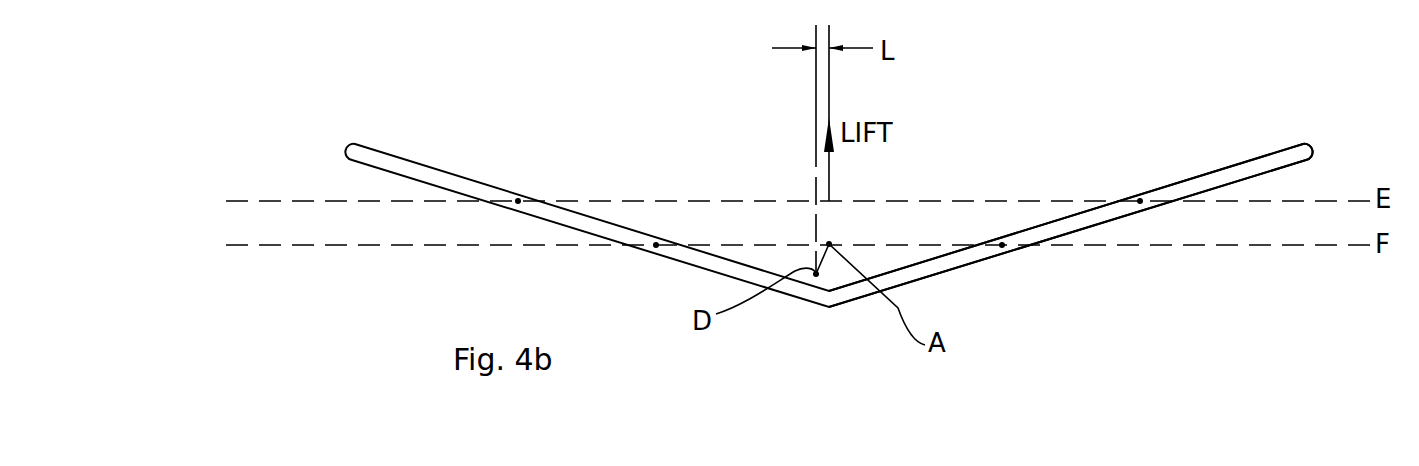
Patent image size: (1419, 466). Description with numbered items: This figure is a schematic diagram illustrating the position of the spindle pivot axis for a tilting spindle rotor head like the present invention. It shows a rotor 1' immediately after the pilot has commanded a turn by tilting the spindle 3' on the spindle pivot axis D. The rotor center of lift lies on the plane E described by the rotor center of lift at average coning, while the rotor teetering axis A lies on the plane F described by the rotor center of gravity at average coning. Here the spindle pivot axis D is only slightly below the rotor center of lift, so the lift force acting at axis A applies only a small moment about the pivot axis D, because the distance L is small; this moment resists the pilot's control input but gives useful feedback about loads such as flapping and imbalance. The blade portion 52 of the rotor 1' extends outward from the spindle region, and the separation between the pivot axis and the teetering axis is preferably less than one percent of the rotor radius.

The rotor 1' is at (828, 257).
The spindle 3' is at (849, 293).
The rotor blade 52 is at (938, 273).